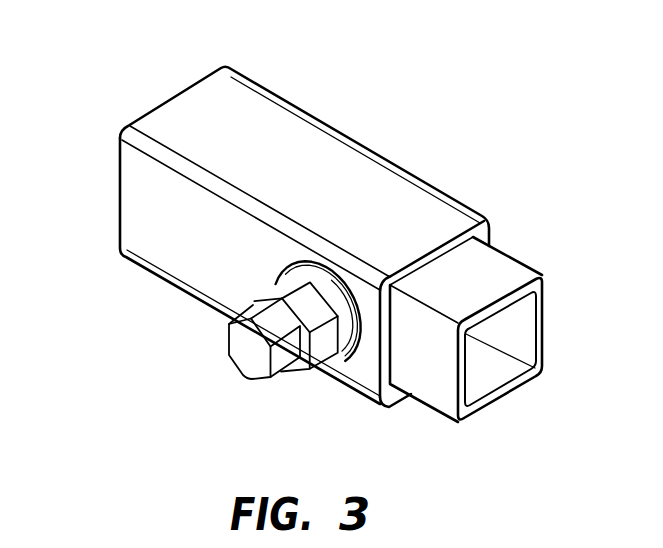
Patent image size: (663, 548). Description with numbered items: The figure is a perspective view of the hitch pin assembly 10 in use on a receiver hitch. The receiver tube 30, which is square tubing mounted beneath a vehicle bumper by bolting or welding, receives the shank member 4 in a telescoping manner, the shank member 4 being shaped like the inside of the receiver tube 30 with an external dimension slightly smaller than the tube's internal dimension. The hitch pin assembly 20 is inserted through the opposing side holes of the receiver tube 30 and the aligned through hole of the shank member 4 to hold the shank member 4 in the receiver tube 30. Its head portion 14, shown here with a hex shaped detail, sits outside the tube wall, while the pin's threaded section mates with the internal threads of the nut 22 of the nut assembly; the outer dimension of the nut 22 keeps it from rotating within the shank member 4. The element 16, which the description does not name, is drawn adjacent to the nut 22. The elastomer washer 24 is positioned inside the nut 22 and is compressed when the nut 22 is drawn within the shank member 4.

The hitch pin assembly 10 is at (150, 65).
The receiver tube 30 is at (340, 155).
The shank member 4 is at (497, 270).
The nut 22 is at (357, 352).
The nut 16 is at (332, 334).
The head portion 14 is at (250, 364).
The elastomer washer 24 is at (302, 262).
The hitch pin assembly 20 is at (47, 544).